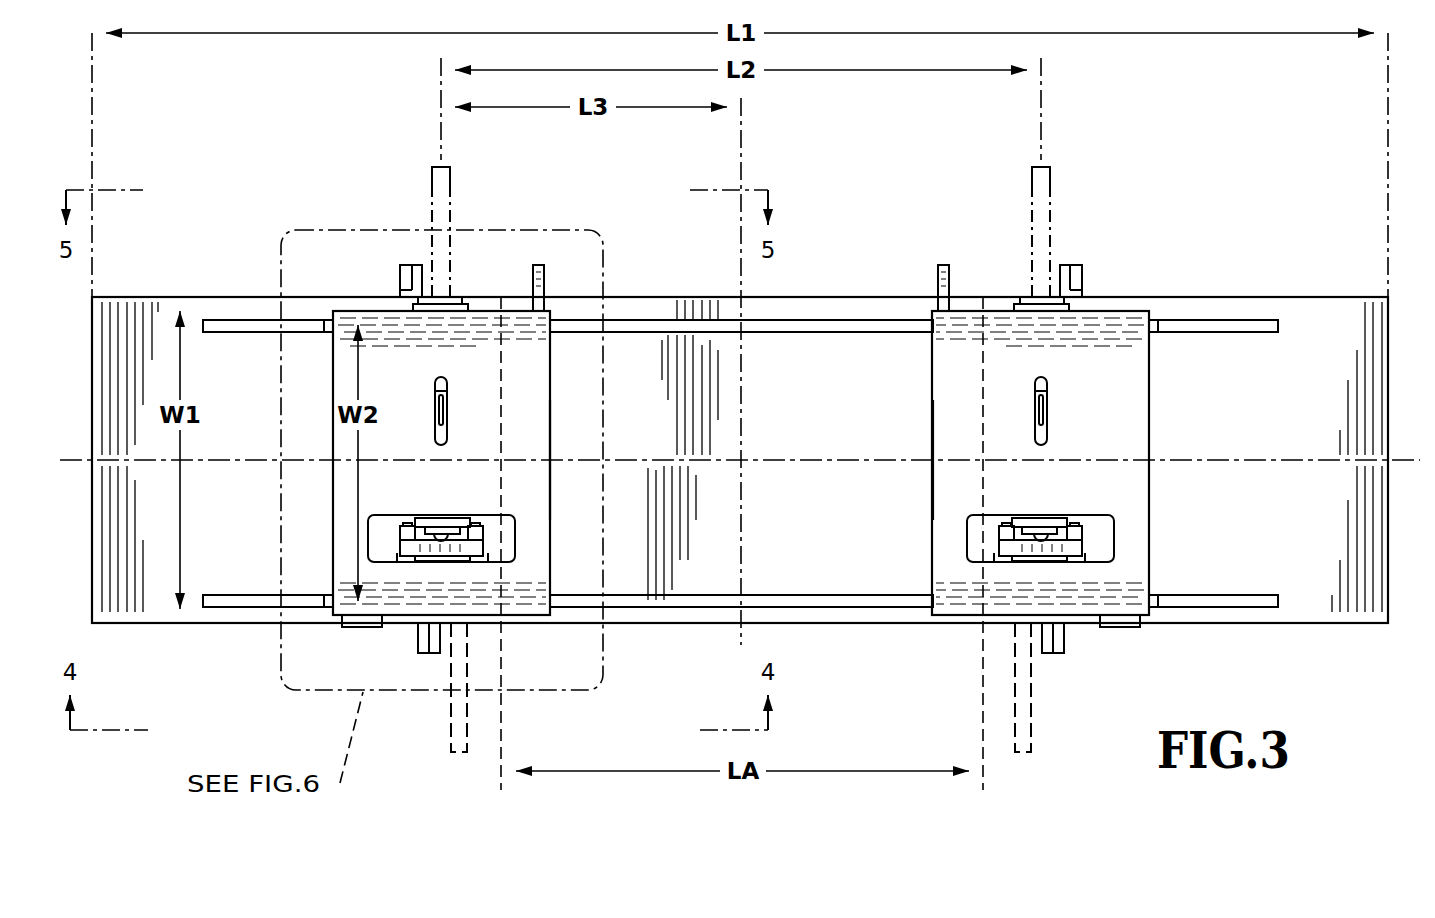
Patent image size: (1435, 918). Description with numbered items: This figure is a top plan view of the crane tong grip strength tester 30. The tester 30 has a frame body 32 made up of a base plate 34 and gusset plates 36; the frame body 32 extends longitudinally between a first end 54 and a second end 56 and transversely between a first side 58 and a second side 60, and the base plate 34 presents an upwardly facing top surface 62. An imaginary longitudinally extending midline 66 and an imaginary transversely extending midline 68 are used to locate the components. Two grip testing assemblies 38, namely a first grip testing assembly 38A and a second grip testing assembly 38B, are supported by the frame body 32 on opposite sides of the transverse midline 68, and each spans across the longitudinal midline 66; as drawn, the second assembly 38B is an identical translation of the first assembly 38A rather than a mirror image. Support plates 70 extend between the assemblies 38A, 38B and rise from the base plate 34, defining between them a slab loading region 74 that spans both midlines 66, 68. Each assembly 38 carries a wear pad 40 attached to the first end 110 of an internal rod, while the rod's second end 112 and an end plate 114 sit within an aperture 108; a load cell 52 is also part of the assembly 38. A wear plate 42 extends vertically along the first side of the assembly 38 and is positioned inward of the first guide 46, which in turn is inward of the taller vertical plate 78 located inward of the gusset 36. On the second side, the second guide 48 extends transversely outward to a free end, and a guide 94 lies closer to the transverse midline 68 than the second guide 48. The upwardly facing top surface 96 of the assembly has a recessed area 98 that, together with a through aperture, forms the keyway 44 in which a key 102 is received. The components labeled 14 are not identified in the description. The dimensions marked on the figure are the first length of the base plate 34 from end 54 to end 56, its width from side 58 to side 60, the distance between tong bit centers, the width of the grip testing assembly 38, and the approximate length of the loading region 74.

The shaft 14 is at (432, 178).
The crane tong grip strength tester 30 is at (1213, 140).
The frame body 32 is at (814, 295).
The base plate 34 is at (864, 300).
The gusset plate 36 is at (309, 320).
The grip testing assembly 38 is at (821, 463).
The first grip testing assembly 38A is at (821, 463).
The second grip testing assembly 38B is at (552, 386).
The wear pad 40 is at (455, 297).
The wear plate 42 is at (478, 626).
The keyway 44 is at (741, 296).
The first guide 46 is at (416, 643).
The second guide 48 is at (398, 284).
The load cell 52 is at (484, 546).
The first end 54 is at (1398, 505).
The second end 56 is at (80, 505).
The first side 58 is at (222, 634).
The second side 60 is at (220, 290).
The upwardly facing top surface 62 is at (866, 428).
The longitudinally extending midline 66 is at (1272, 461).
The transversely extending midline 68 is at (742, 403).
The support plates 70 is at (638, 318).
The slab loading region 74 is at (816, 540).
The vertical plate 78 is at (358, 628).
The guide 94 is at (548, 276).
The upwardly facing top surface 96 is at (528, 422).
The recessed area 98 is at (741, 296).
The key 102 is at (437, 373).
The aperture 108 is at (514, 529).
The first end of rod 110 is at (468, 302).
The second end of rod 112 is at (442, 530).
The end plate 114 is at (816, 507).